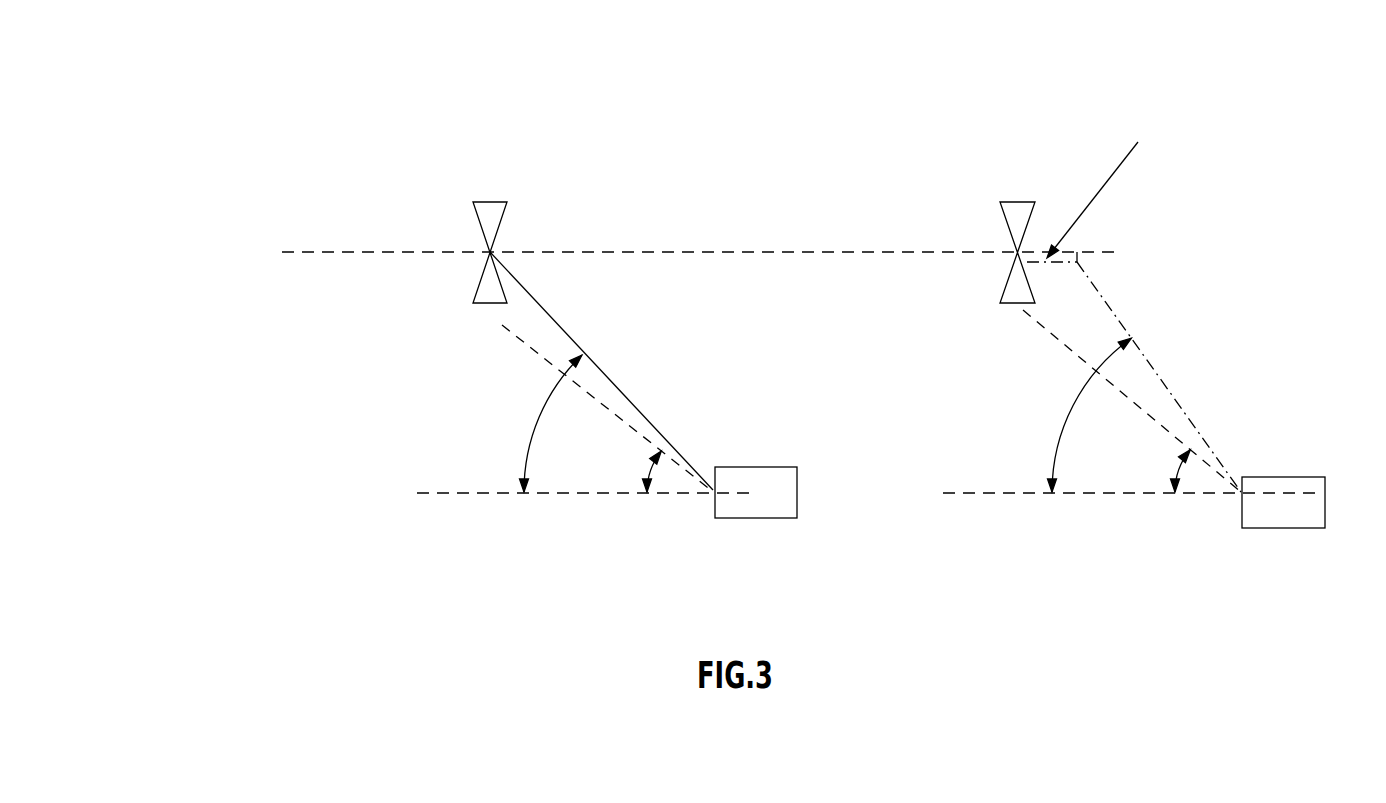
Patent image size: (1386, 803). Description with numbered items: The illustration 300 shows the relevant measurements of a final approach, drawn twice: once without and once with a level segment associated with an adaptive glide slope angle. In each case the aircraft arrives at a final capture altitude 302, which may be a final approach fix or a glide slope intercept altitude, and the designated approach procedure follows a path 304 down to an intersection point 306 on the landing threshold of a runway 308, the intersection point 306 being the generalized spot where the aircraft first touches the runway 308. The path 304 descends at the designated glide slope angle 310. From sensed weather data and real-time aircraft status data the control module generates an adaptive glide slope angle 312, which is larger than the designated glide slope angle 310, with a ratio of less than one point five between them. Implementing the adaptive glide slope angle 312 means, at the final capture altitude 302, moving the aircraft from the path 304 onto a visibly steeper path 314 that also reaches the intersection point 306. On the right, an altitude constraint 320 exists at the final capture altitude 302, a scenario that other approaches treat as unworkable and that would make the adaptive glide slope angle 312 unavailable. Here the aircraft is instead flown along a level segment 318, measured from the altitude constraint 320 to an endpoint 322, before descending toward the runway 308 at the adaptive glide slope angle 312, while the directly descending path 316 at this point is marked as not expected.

The image capture scenario diagram 300 is at (229, 86).
The final capture altitude 302 is at (350, 255).
The path 304 is at (545, 358).
The intersection point 306 is at (712, 493).
The runway 308 is at (755, 502).
The designated glide slope angle 310 is at (648, 482).
The adaptive glide slope angle 312 is at (527, 460).
The path 314 is at (562, 330).
The not expected line of sight 316 is at (1150, 363).
The level segment 318 is at (1038, 257).
The altitude constraint 320 is at (490, 202).
The endpoint 322 is at (1080, 253).